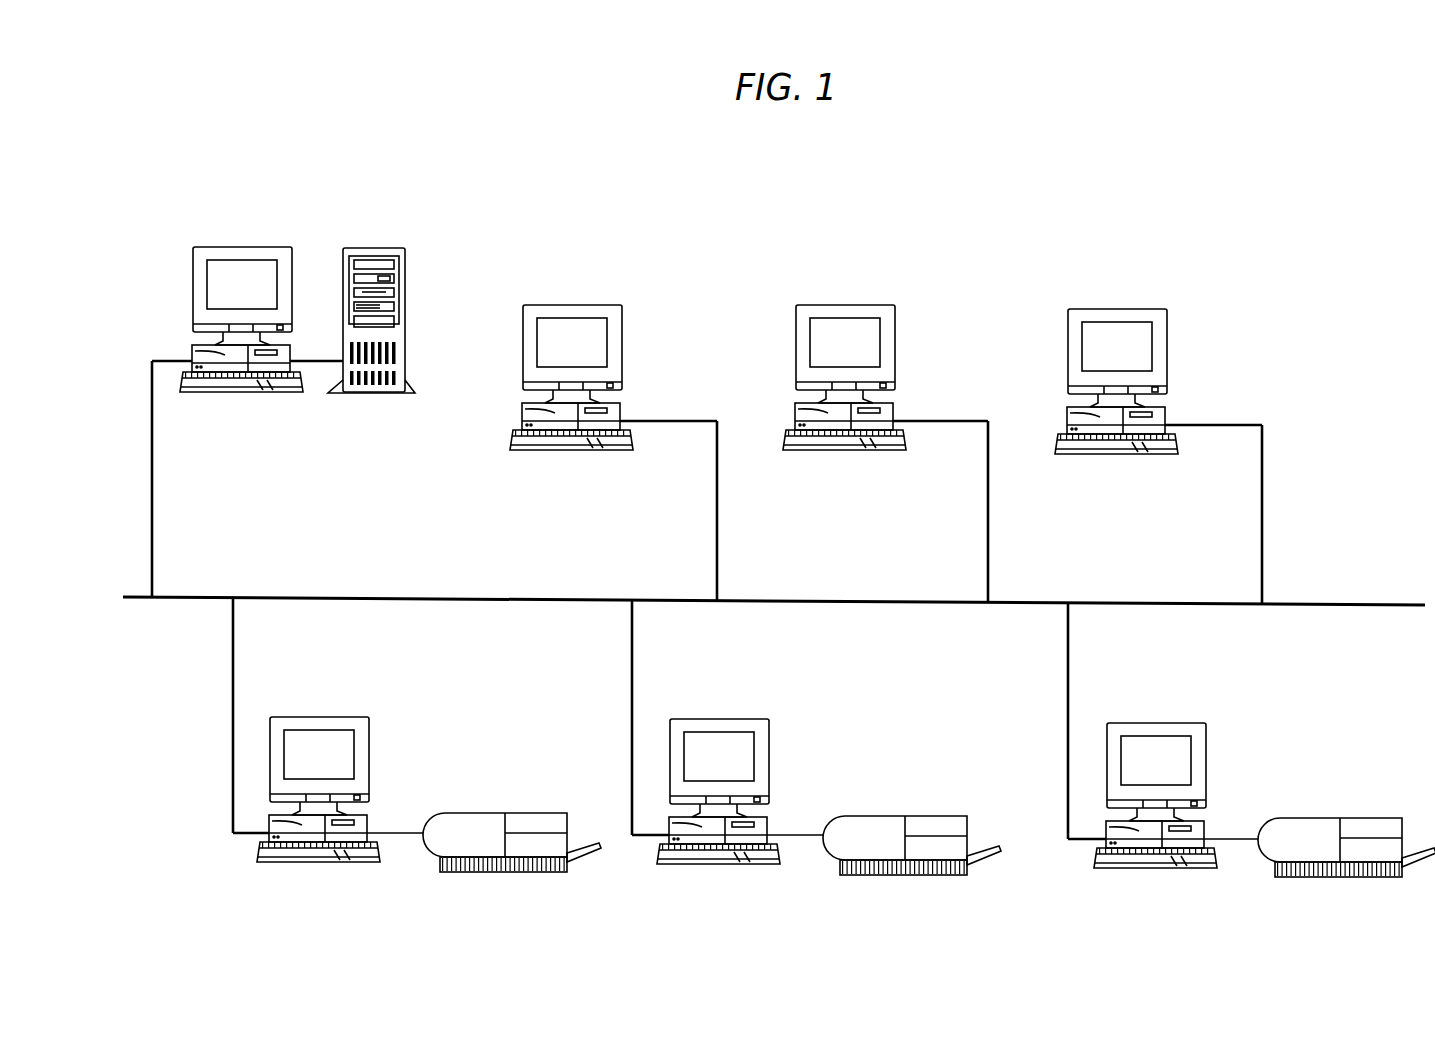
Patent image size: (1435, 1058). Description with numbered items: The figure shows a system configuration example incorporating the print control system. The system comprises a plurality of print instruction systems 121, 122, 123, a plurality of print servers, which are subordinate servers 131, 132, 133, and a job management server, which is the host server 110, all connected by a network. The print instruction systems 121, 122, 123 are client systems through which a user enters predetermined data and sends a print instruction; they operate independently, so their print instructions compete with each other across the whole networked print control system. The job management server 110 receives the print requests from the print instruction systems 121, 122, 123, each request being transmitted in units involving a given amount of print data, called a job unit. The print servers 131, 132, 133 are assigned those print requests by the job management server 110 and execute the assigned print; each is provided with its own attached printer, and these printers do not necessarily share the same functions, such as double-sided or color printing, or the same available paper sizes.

The job management server 110 is at (283, 294).
The print instruction system 121 is at (609, 379).
The print instruction system 122 is at (881, 379).
The print instruction system 123 is at (1154, 384).
The print server 131 is at (417, 778).
The print server 132 is at (816, 781).
The print server 133 is at (1251, 786).